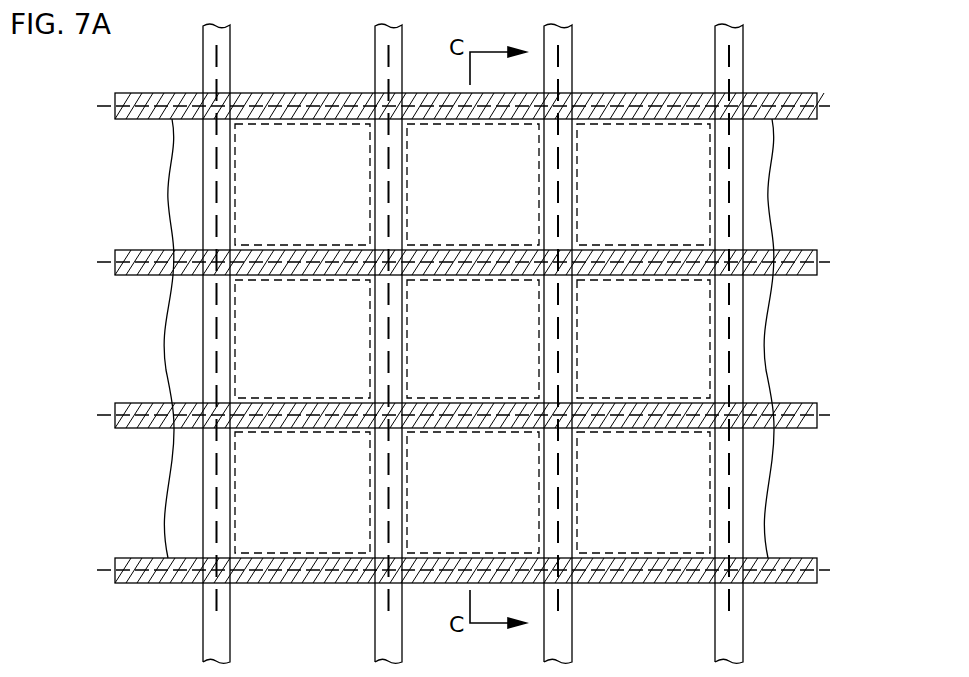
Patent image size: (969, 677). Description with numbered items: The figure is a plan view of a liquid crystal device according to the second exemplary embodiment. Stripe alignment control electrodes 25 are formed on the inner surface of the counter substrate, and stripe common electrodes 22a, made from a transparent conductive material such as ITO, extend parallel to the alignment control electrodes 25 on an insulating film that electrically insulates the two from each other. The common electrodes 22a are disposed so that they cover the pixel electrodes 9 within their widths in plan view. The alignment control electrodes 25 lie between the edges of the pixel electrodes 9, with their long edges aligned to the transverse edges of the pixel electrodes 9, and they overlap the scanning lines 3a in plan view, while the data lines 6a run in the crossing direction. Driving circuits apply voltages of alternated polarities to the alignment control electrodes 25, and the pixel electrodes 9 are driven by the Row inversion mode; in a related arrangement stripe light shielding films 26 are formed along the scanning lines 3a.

The scanning line 3a is at (102, 417).
The data line 6a is at (217, 78).
The pixel electrode 9 is at (700, 339).
The common electrode 22a is at (177, 176).
The alignment control electrode 25 is at (140, 250).
The light shielding film 26 is at (203, 605).